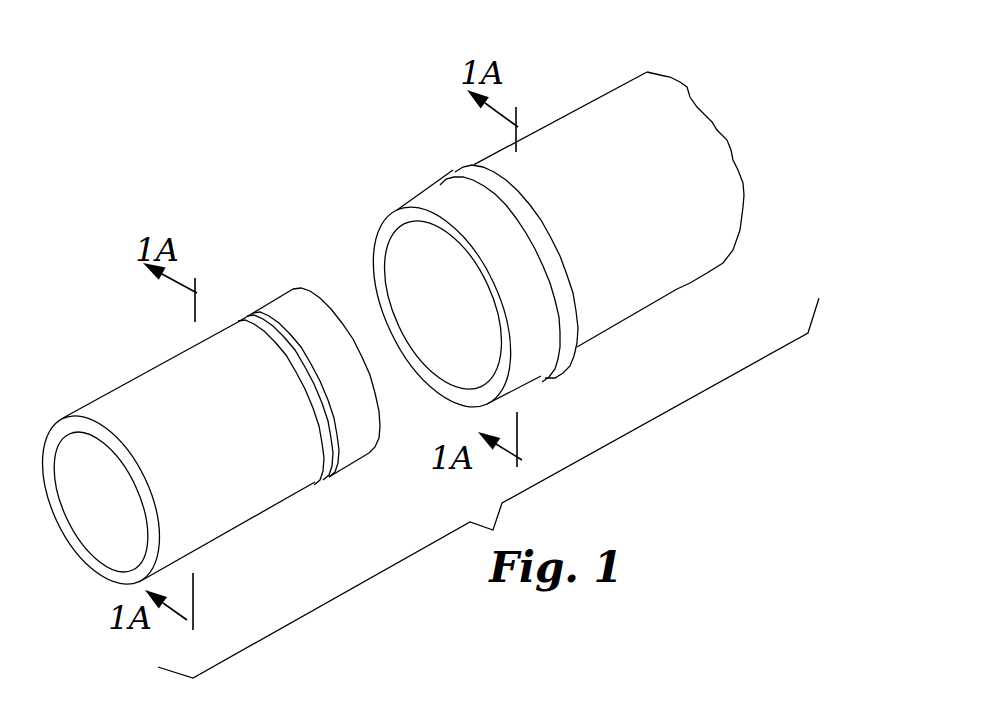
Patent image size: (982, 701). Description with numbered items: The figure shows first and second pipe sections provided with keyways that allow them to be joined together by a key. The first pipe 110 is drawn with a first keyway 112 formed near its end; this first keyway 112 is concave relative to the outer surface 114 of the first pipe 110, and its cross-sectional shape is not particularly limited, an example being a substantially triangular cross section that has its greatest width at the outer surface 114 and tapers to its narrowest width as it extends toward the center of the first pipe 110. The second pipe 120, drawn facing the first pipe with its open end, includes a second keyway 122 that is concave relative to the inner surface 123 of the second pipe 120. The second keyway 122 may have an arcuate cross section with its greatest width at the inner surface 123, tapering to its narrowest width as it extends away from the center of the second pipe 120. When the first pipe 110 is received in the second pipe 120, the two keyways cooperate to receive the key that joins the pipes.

The first pipe 110 is at (94, 390).
The first keyway 112 is at (250, 318).
The outer surface 114 is at (163, 373).
The second pipe 120 is at (571, 101).
The second keyway 122 is at (457, 168).
The inner surface 123 is at (395, 257).